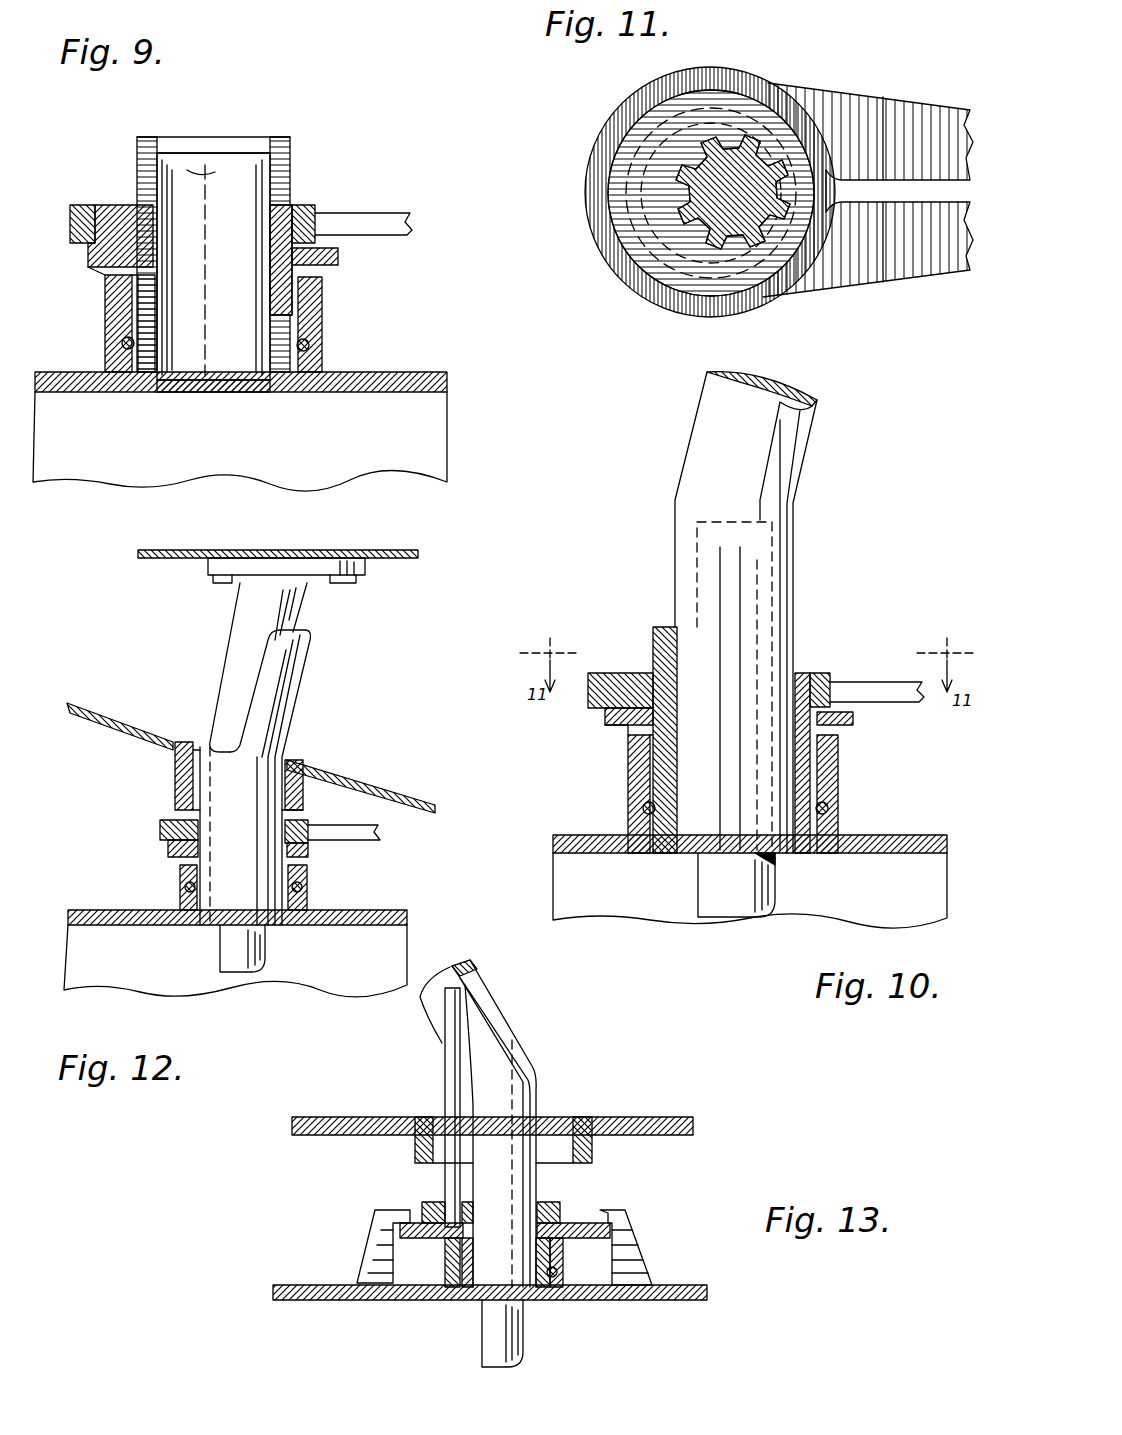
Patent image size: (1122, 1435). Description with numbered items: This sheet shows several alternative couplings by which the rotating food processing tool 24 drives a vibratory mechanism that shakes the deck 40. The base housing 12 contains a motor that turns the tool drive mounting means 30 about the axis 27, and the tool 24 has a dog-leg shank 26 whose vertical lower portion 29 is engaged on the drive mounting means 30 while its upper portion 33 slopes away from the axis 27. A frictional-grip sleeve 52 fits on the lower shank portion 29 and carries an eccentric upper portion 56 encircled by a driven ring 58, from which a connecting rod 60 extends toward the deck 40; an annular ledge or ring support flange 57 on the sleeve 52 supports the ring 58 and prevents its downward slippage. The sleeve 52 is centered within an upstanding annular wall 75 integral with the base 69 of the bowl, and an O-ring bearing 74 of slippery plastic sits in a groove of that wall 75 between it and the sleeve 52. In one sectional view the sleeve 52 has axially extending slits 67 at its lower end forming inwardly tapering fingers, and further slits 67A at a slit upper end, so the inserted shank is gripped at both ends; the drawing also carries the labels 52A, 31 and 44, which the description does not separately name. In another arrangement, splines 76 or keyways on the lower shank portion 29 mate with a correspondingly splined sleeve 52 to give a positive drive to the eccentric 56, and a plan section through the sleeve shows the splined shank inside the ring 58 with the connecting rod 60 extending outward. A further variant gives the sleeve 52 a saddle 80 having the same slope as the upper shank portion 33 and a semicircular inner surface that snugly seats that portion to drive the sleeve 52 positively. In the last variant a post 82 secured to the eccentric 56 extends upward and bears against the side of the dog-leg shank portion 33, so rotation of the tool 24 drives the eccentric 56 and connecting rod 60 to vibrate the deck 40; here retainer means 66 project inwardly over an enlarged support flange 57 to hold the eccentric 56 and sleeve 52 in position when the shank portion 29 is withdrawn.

In FIG. 10, the base housing 12 is at (667, 912).
In FIG. 12, the base housing 12 is at (362, 970).
In FIG. 12, the food processing tool 24 is at (403, 560).
In FIG. 10, the shank 26 is at (785, 612).
In FIG. 12, the shank 26 is at (267, 754).
In FIG. 13, the shank 26 is at (517, 1123).
In FIG. 10, the axis 27 is at (735, 863).
In FIG. 12, the axis 27 is at (245, 930).
In FIG. 13, the axis 27 is at (503, 1300).
In FIG. 10, the vertical lower portion 29 is at (795, 617).
In FIG. 12, the vertical lower portion 29 is at (228, 836).
In FIG. 13, the vertical lower portion 29 is at (527, 1180).
In FIG. 10, the tool drive mounting means 30 is at (778, 896).
In FIG. 12, the tool drive mounting means 30 is at (266, 944).
In FIG. 13, the tool drive mounting means 30 is at (525, 1343).
In FIG. 10, the inner tube 31 is at (760, 578).
In FIG. 10, the upper portion 33 is at (820, 428).
In FIG. 12, the upper portion 33 is at (306, 600).
In FIG. 13, the upper portion 33 is at (497, 1006).
In FIG. 12, the deck 40 is at (412, 798).
In FIG. 13, the deck 40 is at (662, 1118).
In FIG. 12, the bracket 44 is at (200, 740).
In FIG. 13, the bracket 44 is at (556, 1134).
In FIG. 9, the frictional-grip sleeve 52 is at (105, 269).
In FIG. 10, the frictional-grip sleeve 52 is at (812, 765).
In FIG. 12, the frictional-grip sleeve 52 is at (230, 790).
In FIG. 13, the frictional-grip sleeve 52 is at (447, 1258).
In FIG. 9, the tubular housing 52A is at (292, 152).
In FIG. 9, the eccentric upper portion 56 is at (112, 205).
In FIG. 11, the eccentric upper portion 56 is at (622, 167).
In FIG. 10, the eccentric upper portion 56 is at (646, 673).
In FIG. 12, the eccentric upper portion 56 is at (162, 840).
In FIG. 13, the eccentric upper portion 56 is at (437, 1206).
In FIG. 9, the annular ledge 57 is at (339, 258).
In FIG. 10, the annular ledge 57 is at (855, 720).
In FIG. 12, the annular ledge 57 is at (310, 850).
In FIG. 13, the annular ledge 57 is at (628, 1215).
In FIG. 9, the driven ring 58 is at (82, 205).
In FIG. 11, the driven ring 58 is at (602, 128).
In FIG. 10, the driven ring 58 is at (600, 673).
In FIG. 12, the driven ring 58 is at (158, 824).
In FIG. 13, the driven ring 58 is at (420, 1208).
In FIG. 9, the connecting rod 60 is at (383, 214).
In FIG. 11, the connecting rod 60 is at (927, 115).
In FIG. 10, the connecting rod 60 is at (924, 702).
In FIG. 12, the connecting rod 60 is at (378, 840).
In FIG. 13, the retainer means 66 is at (372, 1226).
In FIG. 9, the slits 67 is at (247, 360).
In FIG. 9, the slits 67A is at (240, 157).
In FIG. 9, the base 69 is at (409, 393).
In FIG. 10, the base 69 is at (918, 855).
In FIG. 12, the base 69 is at (372, 925).
In FIG. 13, the base 69 is at (692, 1303).
In FIG. 9, the O-ring bearing 74 is at (310, 345).
In FIG. 10, the O-ring bearing 74 is at (830, 806).
In FIG. 12, the O-ring bearing 74 is at (183, 887).
In FIG. 13, the O-ring bearing 74 is at (554, 1276).
In FIG. 9, the upstanding annular wall 75 is at (323, 304).
In FIG. 10, the upstanding annular wall 75 is at (840, 828).
In FIG. 12, the upstanding annular wall 75 is at (178, 875).
In FIG. 13, the upstanding annular wall 75 is at (567, 1260).
In FIG. 11, the splines 76 is at (730, 243).
In FIG. 10, the splines 76 is at (738, 788).
In FIG. 12, the saddle 80 is at (296, 680).
In FIG. 13, the post 82 is at (445, 1071).